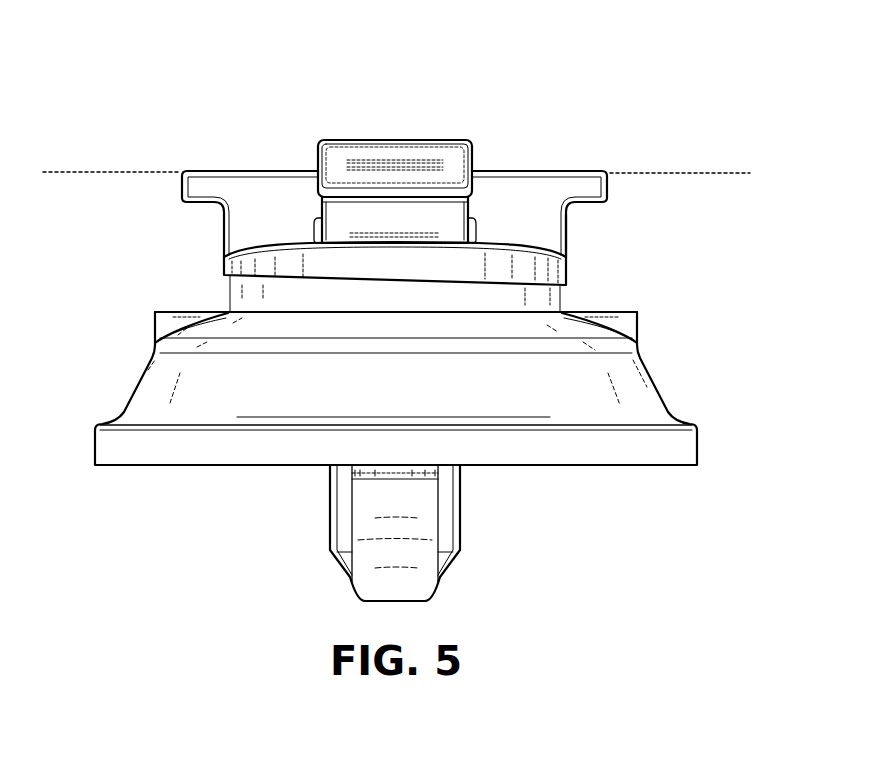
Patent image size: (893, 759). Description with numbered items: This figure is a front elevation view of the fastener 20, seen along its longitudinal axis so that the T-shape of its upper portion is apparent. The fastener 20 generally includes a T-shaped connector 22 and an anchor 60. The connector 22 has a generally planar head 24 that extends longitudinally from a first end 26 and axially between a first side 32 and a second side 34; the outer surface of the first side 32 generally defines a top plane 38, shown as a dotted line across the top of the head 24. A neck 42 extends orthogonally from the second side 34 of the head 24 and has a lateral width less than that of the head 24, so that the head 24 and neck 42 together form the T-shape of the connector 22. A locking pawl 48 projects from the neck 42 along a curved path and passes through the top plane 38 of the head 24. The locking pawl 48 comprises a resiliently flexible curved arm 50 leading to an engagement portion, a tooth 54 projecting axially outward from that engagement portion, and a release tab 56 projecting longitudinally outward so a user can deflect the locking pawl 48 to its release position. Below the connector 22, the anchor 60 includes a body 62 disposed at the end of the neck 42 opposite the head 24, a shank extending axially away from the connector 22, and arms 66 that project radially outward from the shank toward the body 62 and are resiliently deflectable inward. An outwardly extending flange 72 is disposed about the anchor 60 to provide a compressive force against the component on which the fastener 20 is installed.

The fastener 20 is at (713, 95).
The connector 22 is at (150, 204).
The head 24 is at (514, 160).
The first end 26 is at (210, 186).
The first side 32 is at (586, 171).
The second side 34 is at (589, 208).
The top plane 38 is at (133, 170).
The neck 42 is at (572, 247).
The locking pawl 48 is at (439, 127).
The curved arm 50 is at (340, 213).
The tooth 54 is at (352, 150).
The release tab 56 is at (405, 187).
The anchor 60 is at (242, 528).
The body 62 is at (555, 278).
The arms 66 is at (417, 500).
The flange 72 is at (630, 398).